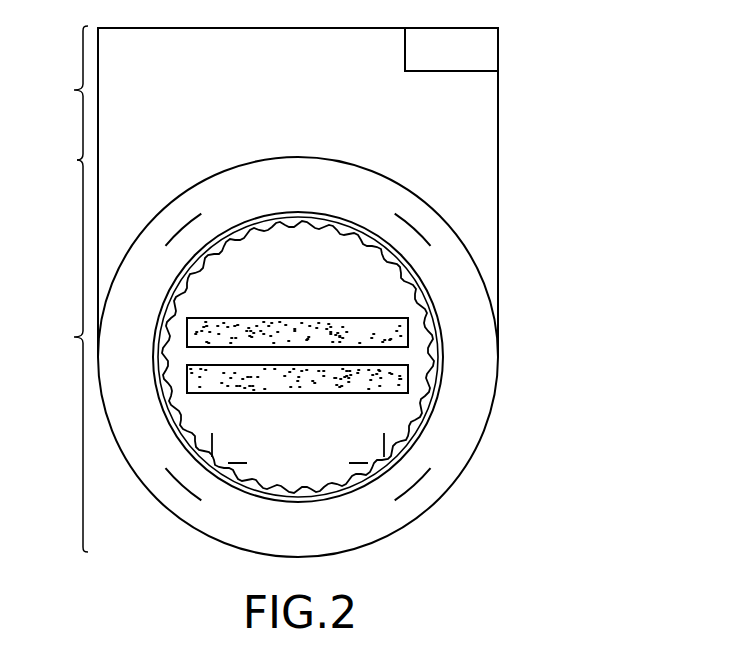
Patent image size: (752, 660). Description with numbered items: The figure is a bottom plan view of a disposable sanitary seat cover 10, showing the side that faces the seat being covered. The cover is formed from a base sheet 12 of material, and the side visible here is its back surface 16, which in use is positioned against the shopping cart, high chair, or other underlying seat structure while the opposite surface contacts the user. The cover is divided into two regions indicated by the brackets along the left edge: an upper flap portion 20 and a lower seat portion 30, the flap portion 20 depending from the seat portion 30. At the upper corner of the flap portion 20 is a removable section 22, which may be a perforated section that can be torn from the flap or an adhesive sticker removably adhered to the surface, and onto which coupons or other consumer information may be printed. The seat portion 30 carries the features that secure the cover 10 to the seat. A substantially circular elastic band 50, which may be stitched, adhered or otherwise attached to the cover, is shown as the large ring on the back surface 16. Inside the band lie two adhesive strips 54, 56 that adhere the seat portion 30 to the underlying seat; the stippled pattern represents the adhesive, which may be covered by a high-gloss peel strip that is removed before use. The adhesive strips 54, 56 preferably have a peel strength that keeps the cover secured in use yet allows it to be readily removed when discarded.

The disposable sanitary seat cover 10 is at (339, 278).
The base sheet 12 is at (480, 180).
The back surface 16 is at (163, 95).
The flap portion 20 is at (63, 93).
The removable section 22 is at (470, 43).
The seat portion 30 is at (64, 356).
The elastic band 50 is at (438, 315).
The adhesive strip 54 is at (297, 318).
The adhesive strip 56 is at (305, 393).